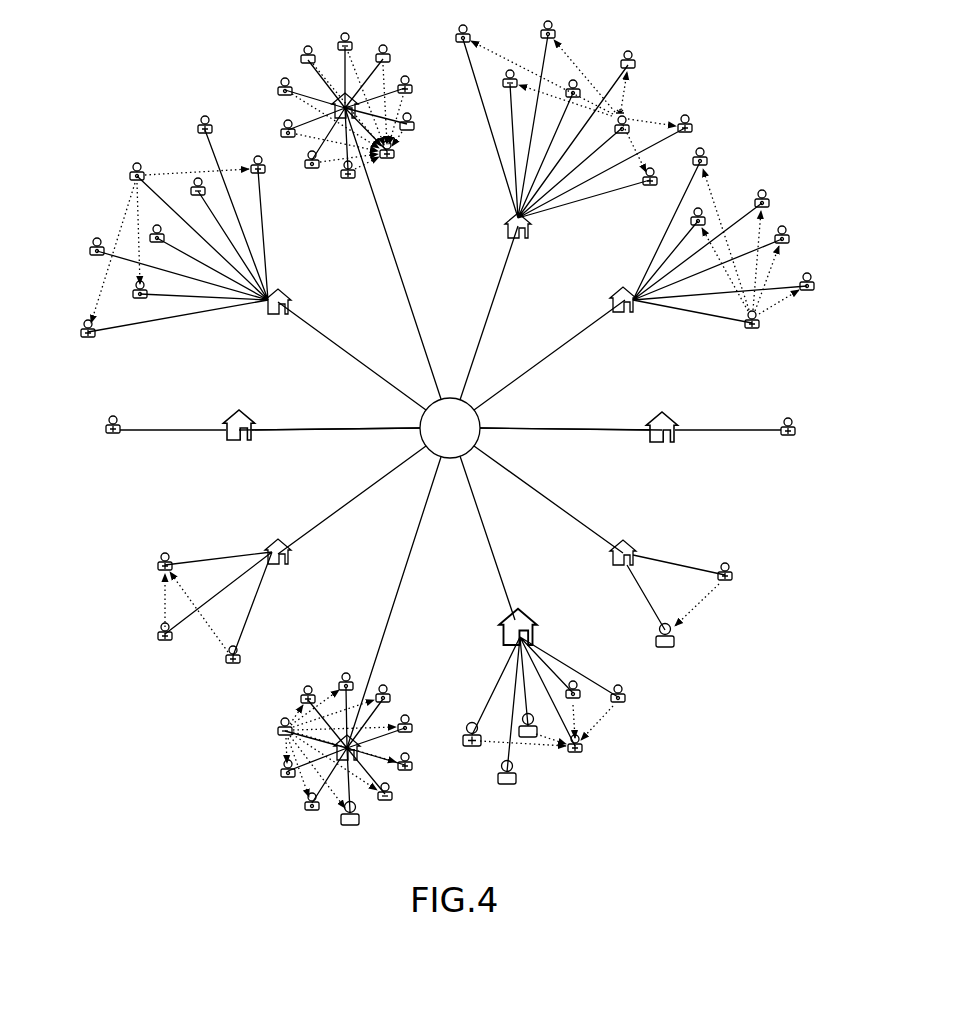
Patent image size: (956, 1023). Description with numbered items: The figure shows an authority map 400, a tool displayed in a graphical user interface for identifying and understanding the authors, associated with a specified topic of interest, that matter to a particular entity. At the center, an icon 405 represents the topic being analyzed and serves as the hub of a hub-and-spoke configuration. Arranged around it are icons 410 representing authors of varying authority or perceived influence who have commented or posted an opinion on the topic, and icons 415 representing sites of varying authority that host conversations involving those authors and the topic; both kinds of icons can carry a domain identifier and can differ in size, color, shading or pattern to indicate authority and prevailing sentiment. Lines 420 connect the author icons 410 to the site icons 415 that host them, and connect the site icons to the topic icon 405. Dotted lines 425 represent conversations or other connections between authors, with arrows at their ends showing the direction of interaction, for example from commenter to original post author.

The authority map 400 is at (197, 754).
The icon representing a topic 405 is at (465, 430).
The icons representing authors 410 is at (278, 93).
The icons representing sites 415 is at (242, 418).
The lines 420 is at (370, 365).
The dotted lines 425 is at (784, 269).